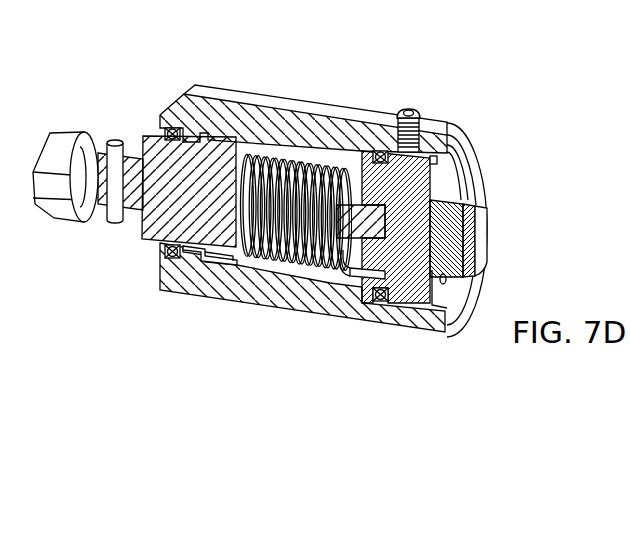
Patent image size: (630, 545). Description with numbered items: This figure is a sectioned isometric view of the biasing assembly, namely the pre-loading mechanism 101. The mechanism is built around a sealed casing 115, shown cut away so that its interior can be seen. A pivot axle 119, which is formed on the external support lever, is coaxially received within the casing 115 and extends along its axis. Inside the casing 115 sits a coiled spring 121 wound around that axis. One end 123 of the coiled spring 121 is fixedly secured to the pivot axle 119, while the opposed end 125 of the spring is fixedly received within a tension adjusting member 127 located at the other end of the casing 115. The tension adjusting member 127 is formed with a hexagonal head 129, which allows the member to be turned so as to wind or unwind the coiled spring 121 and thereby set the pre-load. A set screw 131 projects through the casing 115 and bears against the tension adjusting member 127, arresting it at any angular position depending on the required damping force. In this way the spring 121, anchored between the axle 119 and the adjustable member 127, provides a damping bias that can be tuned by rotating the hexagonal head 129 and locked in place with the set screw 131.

The pre-loading mechanism 101 is at (275, 62).
The sealed casing 115 is at (220, 113).
The pivot axle 119 is at (157, 183).
The coiled spring 121 is at (310, 147).
The one end of the coiled spring 123 is at (222, 248).
The opposed end of the coiled spring 125 is at (347, 283).
The tension adjusting member 127 is at (463, 187).
The hexagonal head 129 is at (480, 232).
The set screw 131 is at (413, 113).